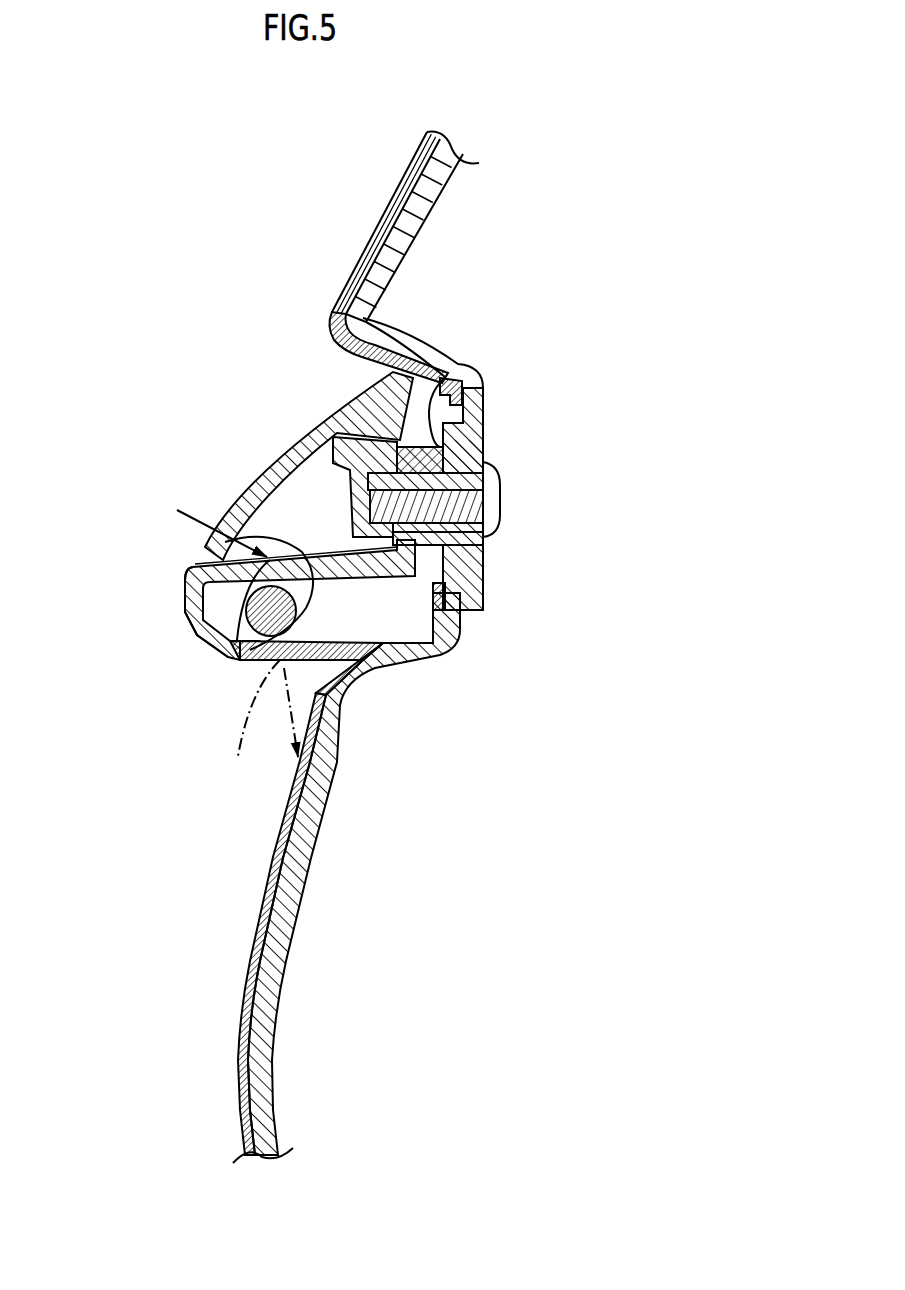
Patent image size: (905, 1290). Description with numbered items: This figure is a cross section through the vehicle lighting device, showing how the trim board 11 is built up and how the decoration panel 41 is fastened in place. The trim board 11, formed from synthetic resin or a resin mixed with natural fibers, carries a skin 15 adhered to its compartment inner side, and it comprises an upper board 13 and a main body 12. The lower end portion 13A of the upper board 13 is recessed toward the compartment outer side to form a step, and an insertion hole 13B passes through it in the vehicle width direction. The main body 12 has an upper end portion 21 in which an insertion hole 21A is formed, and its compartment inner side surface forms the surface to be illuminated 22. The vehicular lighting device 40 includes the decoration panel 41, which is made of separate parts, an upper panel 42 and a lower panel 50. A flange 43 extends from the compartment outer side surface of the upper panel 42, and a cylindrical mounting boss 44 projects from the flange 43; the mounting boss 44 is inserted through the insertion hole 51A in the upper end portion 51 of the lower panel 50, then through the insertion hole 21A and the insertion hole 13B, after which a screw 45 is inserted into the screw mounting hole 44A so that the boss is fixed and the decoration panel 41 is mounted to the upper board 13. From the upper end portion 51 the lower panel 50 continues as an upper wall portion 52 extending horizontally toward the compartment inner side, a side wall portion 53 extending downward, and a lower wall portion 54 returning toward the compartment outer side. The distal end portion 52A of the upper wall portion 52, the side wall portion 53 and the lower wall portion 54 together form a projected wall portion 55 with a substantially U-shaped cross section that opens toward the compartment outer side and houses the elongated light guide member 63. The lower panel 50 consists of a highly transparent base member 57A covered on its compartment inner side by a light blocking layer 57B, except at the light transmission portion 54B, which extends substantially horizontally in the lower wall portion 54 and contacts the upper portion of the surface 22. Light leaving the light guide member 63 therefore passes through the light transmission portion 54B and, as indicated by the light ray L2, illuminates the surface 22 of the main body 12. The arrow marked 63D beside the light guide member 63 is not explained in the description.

The trim board 11 is at (407, 647).
The main body 12 is at (277, 1007).
The upper board 13 is at (443, 170).
The lower end portion of the upper board 13A is at (472, 417).
The insertion hole 13B is at (475, 532).
The skin 15 is at (377, 233).
The upper end portion of the main body 21 is at (437, 403).
The insertion hole 21A is at (480, 510).
The surface to be illuminated 22 is at (292, 885).
The vehicular lighting device 40 is at (223, 498).
The decoration panel 41 is at (230, 522).
The upper panel 42 is at (350, 393).
The flange 43 is at (327, 420).
The mounting boss 44 is at (472, 462).
The screw mounting hole 44A is at (492, 483).
The screw 45 is at (497, 463).
The lower panel 50 is at (207, 545).
The upper end portion of the lower panel 51 is at (413, 457).
The insertion hole 51A is at (477, 580).
The upper wall portion 52 is at (317, 553).
The distal end portion of the upper wall portion 52A is at (187, 572).
The side wall portion 53 is at (197, 608).
The lower wall portion 54 is at (195, 643).
The light transmission portion 54B is at (347, 712).
The projected wall portion 55 is at (67, 575).
The base member 57A is at (328, 692).
The light blocking layer 57B is at (257, 660).
The light guide member 63 is at (243, 640).
The pressing direction 63D is at (199, 527).
The light ray L2 is at (262, 724).